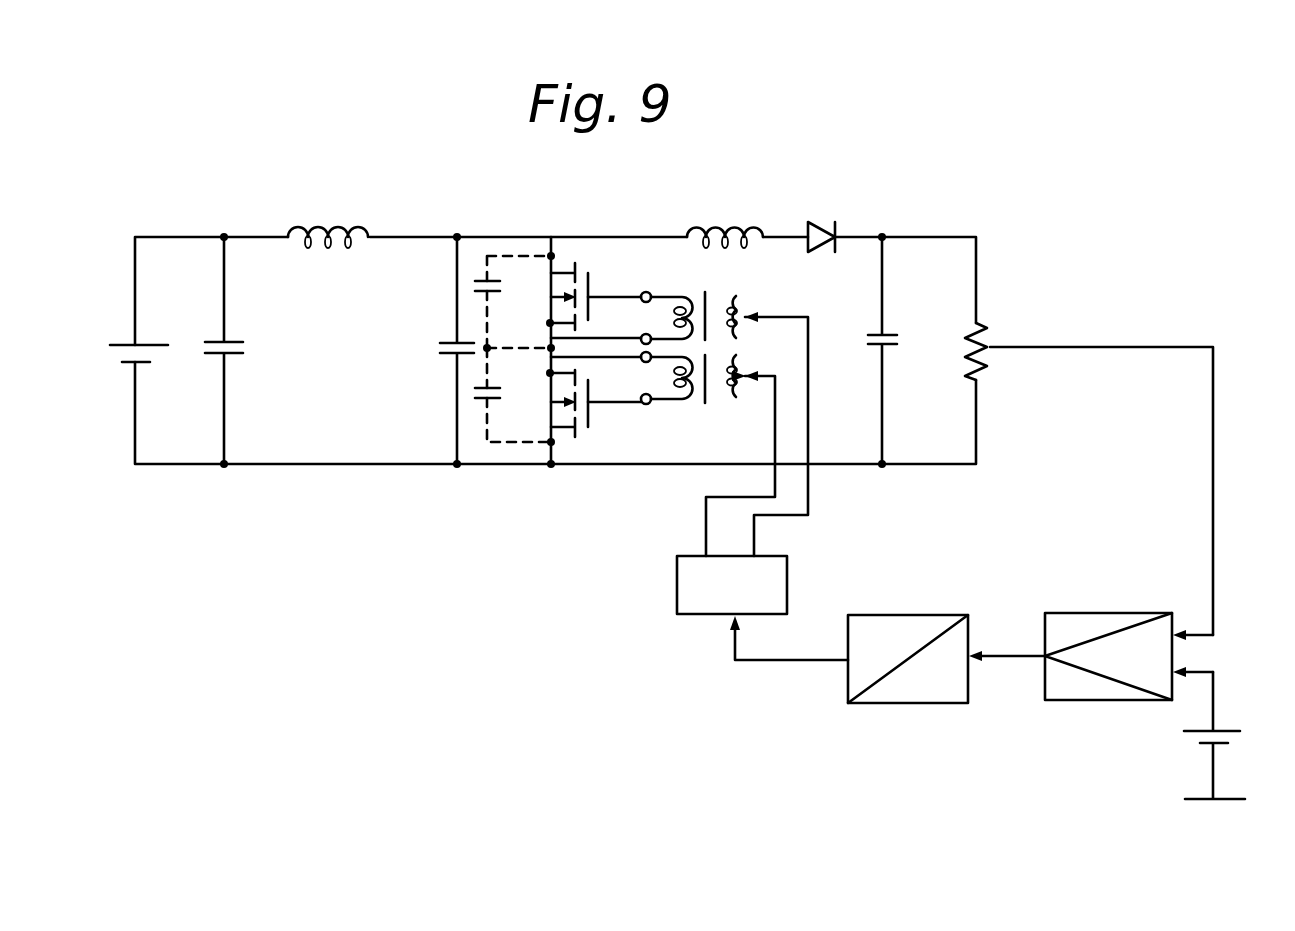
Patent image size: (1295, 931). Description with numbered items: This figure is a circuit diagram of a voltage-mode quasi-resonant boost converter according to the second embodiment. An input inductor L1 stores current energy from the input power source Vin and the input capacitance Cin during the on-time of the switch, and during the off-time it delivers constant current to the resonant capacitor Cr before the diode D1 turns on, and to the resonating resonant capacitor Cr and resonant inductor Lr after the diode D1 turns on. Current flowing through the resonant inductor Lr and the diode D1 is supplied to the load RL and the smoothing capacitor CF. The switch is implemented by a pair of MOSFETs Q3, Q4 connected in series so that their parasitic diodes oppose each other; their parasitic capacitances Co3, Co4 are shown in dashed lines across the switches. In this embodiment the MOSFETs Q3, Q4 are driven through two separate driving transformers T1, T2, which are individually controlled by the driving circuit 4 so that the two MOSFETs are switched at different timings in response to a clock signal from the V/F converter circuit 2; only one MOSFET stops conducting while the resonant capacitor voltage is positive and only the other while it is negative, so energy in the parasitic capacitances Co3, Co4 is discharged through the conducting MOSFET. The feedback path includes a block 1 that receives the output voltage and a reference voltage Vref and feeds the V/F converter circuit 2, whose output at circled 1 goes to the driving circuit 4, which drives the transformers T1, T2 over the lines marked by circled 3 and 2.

The error amplifier / comparator 1 is at (1106, 588).
The V/F converter circuit 2 is at (917, 614).
The drive signal to transformer T2 3 is at (711, 463).
The driving circuit 4 is at (677, 590).
The input power source Vin is at (121, 358).
The input capacitance Cin is at (244, 350).
The input inductor L1 is at (331, 230).
The resonant capacitor Cr is at (440, 348).
The parasitic capacitance of MOSFET Q3 Co3 is at (474, 287).
The parasitic capacitance of MOSFET Q4 Co4 is at (470, 396).
The MOSFET Q3 is at (590, 284).
The MOSFET Q4 is at (596, 414).
The driving transformer T1 is at (705, 290).
The driving transformer T2 is at (705, 405).
The resonant inductor Lr is at (725, 228).
The diode D1 is at (826, 218).
The smoothing capacitor CF is at (864, 341).
The load RL is at (967, 356).
The reference voltage source Vref is at (1235, 735).